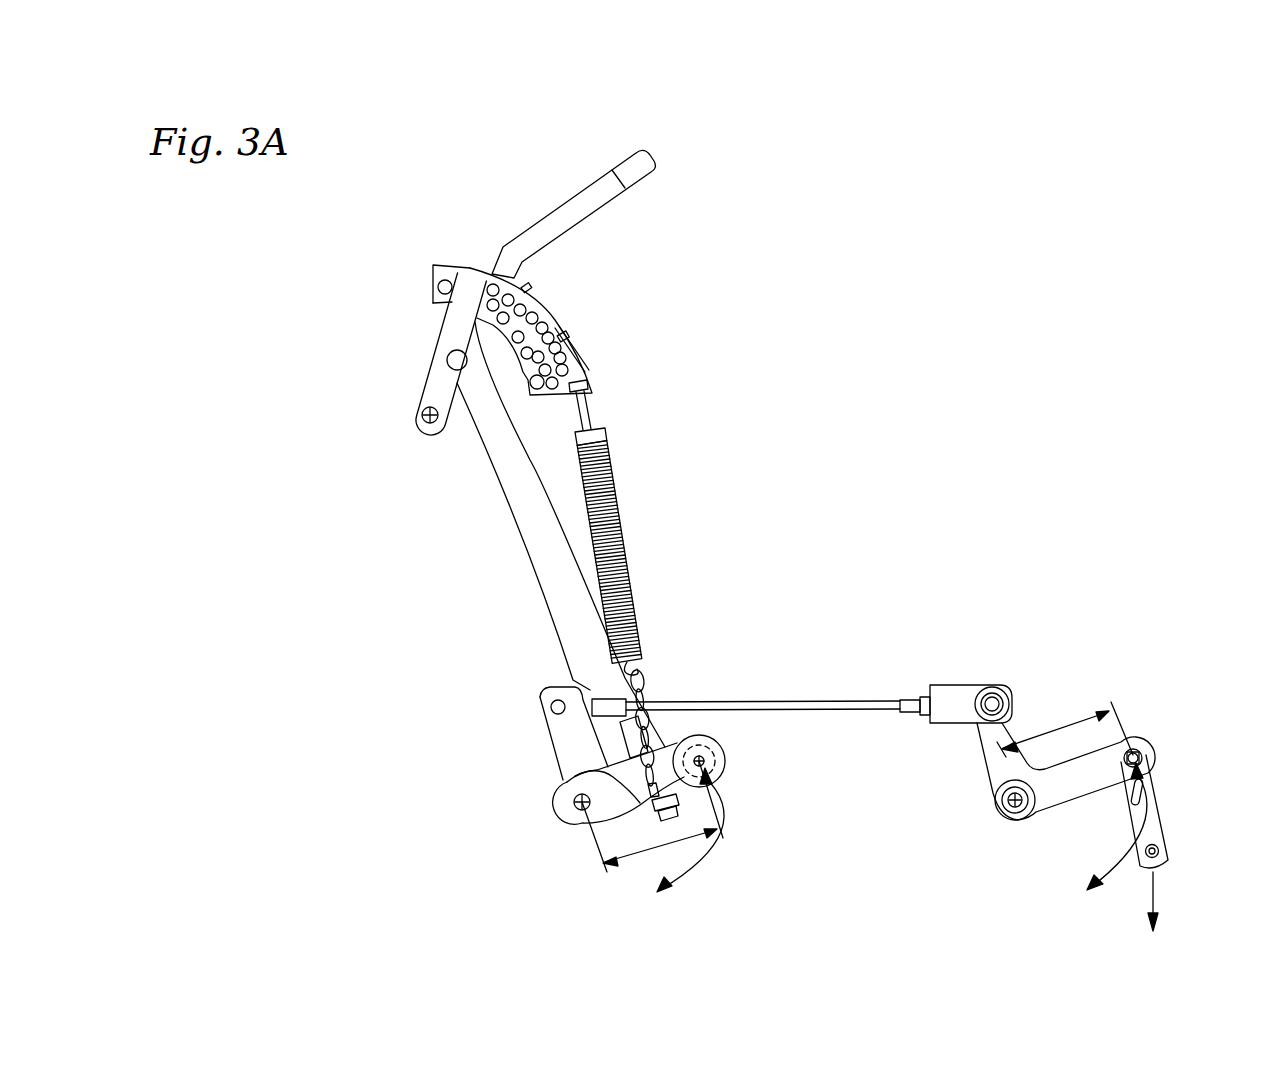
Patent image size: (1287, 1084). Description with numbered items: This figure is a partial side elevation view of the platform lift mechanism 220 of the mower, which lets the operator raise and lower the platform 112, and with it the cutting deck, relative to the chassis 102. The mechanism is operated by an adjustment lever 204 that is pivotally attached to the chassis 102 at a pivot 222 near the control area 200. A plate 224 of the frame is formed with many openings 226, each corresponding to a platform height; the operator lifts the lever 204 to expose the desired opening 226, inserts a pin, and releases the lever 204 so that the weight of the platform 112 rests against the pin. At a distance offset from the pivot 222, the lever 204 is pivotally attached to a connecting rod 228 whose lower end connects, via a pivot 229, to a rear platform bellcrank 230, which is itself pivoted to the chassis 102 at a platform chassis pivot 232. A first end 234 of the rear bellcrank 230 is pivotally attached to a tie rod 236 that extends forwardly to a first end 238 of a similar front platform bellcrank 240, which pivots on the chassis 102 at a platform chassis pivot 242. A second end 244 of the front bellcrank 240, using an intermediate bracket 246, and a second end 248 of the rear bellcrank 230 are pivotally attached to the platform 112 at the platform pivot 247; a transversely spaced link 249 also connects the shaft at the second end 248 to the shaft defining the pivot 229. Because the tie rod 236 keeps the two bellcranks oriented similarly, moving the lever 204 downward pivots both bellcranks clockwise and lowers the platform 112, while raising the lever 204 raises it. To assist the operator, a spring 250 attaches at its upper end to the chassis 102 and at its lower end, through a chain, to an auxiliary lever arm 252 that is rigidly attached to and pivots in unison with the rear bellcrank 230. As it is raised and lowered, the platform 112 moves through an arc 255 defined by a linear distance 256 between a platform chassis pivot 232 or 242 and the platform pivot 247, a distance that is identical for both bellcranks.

The control area 200 is at (478, 201).
The platform lift mechanism 220 is at (676, 244).
The adjustment lever 204 is at (578, 193).
The chassis 102 is at (455, 266).
The pivot 222 is at (420, 436).
The plate 224 is at (548, 312).
The openings 226 is at (564, 350).
The connecting rod 228 is at (512, 502).
The spring 250 is at (617, 487).
The pivot 229 is at (672, 747).
The first end of rear platform bellcrank 234 is at (548, 682).
The platform chassis pivot 232 is at (570, 820).
The rear platform bellcrank 230 is at (548, 757).
The auxiliary lever arm 252 is at (565, 796).
The second end of rear platform bellcrank 248 is at (718, 752).
The platform pivot 247 is at (711, 768).
The link 249 is at (705, 737).
The tie rod 236 is at (813, 702).
The first end of front platform bellcrank 238 is at (993, 684).
The front platform bellcrank 240 is at (1062, 808).
The platform chassis pivot 242 is at (1003, 815).
The second end of front platform bellcrank 244 is at (1142, 754).
The intermediate bracket 246 is at (1165, 828).
The platform 112 is at (1158, 888).
The arc 255 is at (708, 862).
The linear distance 256 is at (630, 872).